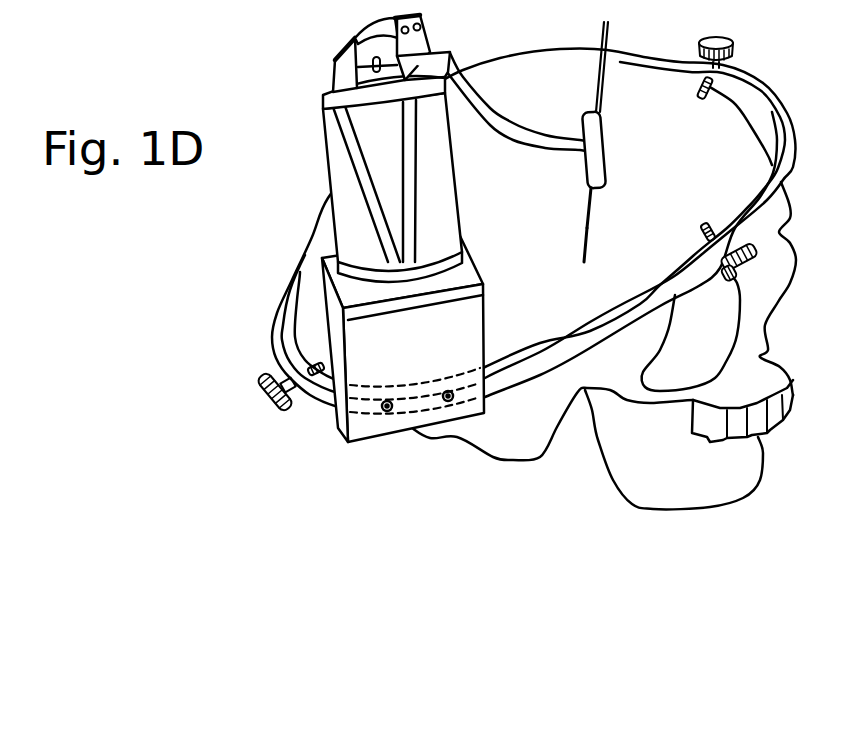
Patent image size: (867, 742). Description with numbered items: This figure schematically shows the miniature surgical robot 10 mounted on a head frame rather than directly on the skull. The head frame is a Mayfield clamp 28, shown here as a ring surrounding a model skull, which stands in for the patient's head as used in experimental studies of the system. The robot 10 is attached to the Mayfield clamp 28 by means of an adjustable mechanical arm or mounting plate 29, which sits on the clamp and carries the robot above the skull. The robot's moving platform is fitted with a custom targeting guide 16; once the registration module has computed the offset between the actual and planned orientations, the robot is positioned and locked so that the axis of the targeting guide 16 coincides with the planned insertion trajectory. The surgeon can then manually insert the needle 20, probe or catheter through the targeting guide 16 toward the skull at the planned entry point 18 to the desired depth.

The robot 10 is at (456, 178).
The targeting guide 16 is at (607, 143).
The entry point 18 is at (587, 260).
The needle 20 is at (591, 218).
The Mayfield clamp 28 is at (320, 406).
The adjustable mechanical arm or mounting plate 29 is at (486, 318).